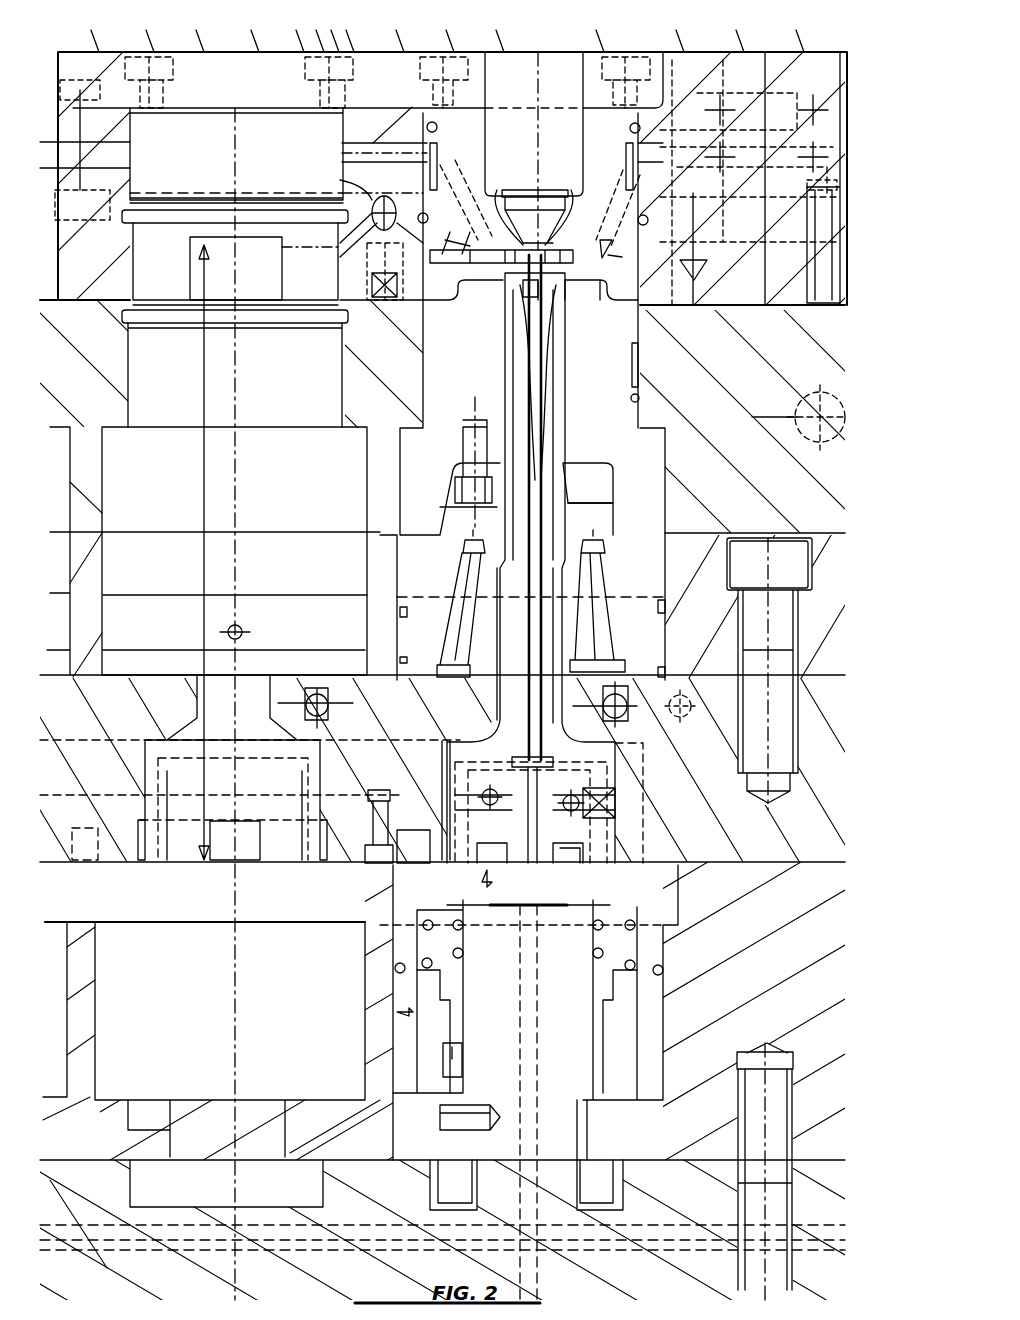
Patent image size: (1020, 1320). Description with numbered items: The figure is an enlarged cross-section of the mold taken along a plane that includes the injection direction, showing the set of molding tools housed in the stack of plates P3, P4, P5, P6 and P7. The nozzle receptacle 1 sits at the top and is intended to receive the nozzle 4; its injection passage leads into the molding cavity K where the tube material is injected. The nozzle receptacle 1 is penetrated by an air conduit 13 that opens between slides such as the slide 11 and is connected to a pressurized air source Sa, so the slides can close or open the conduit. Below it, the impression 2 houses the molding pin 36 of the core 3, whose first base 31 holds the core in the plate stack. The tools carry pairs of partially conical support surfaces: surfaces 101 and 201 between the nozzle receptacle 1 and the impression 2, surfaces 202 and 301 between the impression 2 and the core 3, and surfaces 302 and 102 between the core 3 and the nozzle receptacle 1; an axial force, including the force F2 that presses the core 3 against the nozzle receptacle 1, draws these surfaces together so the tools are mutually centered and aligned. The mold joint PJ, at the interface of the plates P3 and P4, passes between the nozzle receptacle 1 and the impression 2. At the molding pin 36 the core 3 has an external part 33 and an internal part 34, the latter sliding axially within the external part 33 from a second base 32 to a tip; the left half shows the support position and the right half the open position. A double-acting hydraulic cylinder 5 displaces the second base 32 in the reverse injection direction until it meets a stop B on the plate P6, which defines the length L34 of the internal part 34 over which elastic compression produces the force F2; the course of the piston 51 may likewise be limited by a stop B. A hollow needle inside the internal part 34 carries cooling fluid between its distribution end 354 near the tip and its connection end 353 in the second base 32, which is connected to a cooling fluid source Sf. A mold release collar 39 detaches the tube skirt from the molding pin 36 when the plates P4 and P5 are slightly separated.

The nozzle 4 is at (565, 70).
The nozzle receptacle 1 is at (517, 140).
The support surface 102 is at (553, 205).
The slide 11 is at (500, 200).
The air conduit 13 is at (460, 224).
The support surface 101 is at (583, 252).
The molding cavity K is at (512, 290).
The pressurized air source Sa is at (373, 210).
The mold joint PJ is at (303, 300).
The length of the internal part L34 is at (203, 522).
The stop B is at (420, 828).
The double-acting hydraulic cylinder 5 is at (365, 1018).
The impression 2 is at (531, 568).
The molding pin 36 is at (573, 350).
The support surface 201 is at (580, 336).
The distribution end 354 is at (517, 338).
The external part 33 is at (515, 364).
The core 3 is at (584, 461).
The support surface 302 is at (550, 450).
The mold release collar 39 is at (610, 500).
The support surface 202 is at (620, 527).
The support surface 301 is at (615, 528).
The first base 31 is at (431, 565).
The internal part 34 is at (573, 620).
The second base 32 is at (505, 720).
The source of cooling fluid Sf is at (423, 818).
The connection end 353 is at (540, 850).
The force F2 is at (502, 883).
The piston 51 is at (655, 883).
The plate P5 is at (756, 674).
The plate P6 is at (751, 823).
The plate P7 is at (768, 1100).
The plate P4 is at (790, 417).
The plate P3 is at (841, 184).